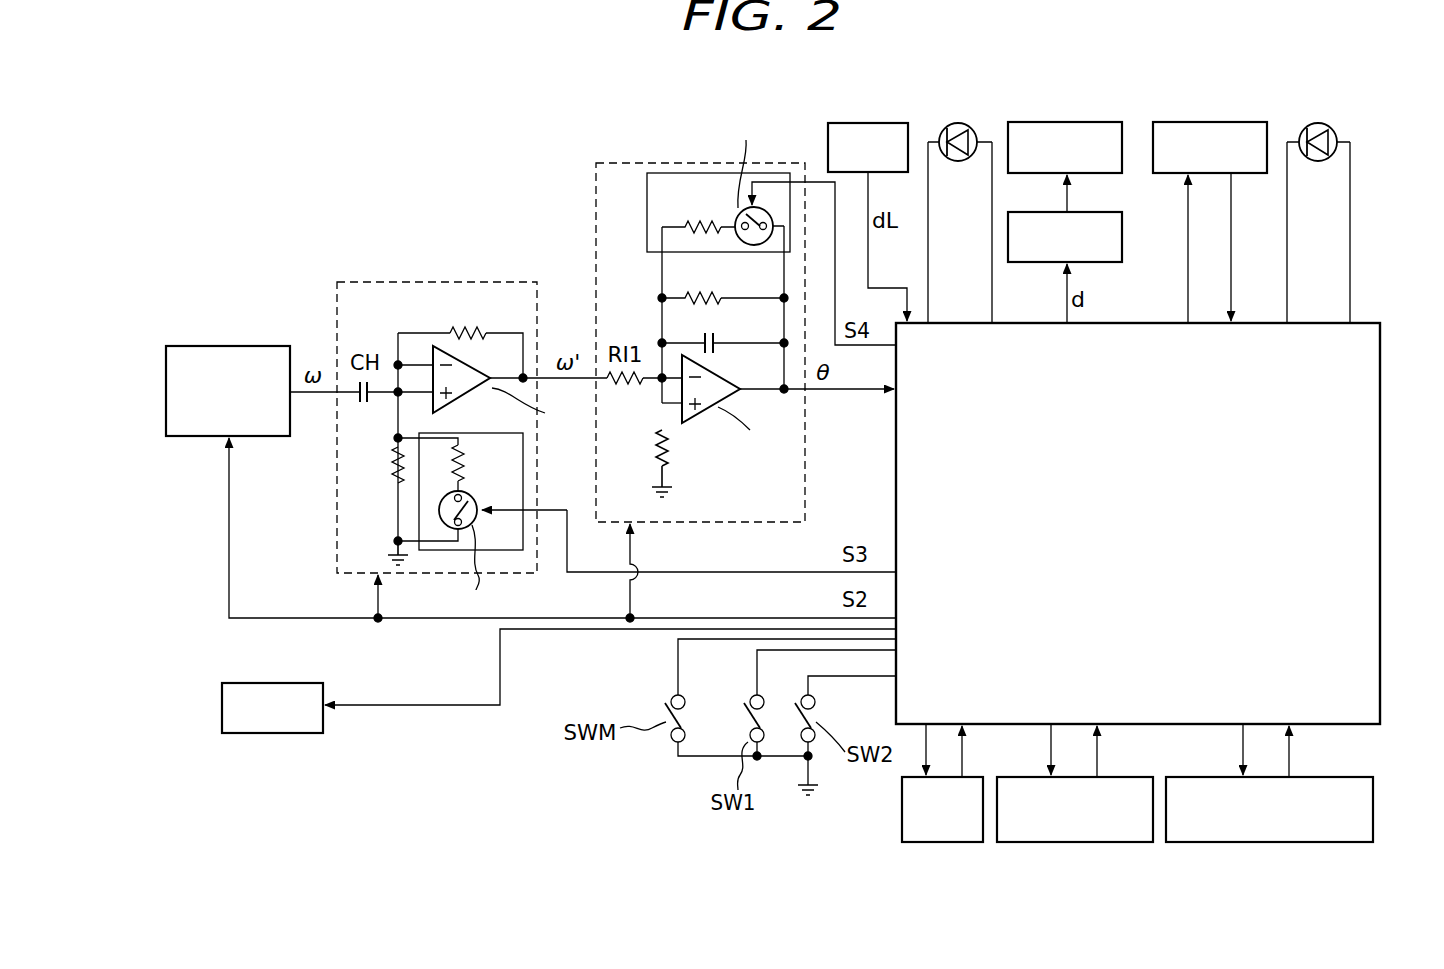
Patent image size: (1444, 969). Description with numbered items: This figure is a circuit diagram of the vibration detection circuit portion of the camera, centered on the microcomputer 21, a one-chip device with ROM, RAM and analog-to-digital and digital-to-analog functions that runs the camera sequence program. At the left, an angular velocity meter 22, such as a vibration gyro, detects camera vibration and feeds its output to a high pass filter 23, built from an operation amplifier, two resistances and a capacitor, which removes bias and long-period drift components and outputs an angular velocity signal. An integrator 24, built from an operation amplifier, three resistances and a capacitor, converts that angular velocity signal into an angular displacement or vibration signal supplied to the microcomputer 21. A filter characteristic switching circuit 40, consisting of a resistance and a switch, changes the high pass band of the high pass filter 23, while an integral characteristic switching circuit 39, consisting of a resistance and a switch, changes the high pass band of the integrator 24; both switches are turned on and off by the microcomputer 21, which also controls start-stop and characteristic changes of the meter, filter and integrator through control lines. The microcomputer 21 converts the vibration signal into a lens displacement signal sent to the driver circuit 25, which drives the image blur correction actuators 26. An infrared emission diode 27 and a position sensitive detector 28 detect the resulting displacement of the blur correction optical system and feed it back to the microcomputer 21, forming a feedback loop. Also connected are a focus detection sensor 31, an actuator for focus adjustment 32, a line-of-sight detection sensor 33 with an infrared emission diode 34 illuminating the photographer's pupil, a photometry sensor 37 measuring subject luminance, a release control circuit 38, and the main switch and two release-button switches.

The microcomputer 21 is at (1380, 510).
The angular velocity meter 22 is at (250, 345).
The high pass filter 23 is at (457, 282).
The integrator 24 is at (683, 163).
The driver circuit 25 is at (1122, 232).
The image blur correction actuators 26 is at (1072, 122).
The infrared emission diode 27 is at (961, 123).
The position sensitive detector 28 is at (873, 123).
The focus detection sensor 31 is at (945, 842).
The actuator for focus adjustment 32 is at (270, 733).
The line-of-sight detection sensor 33 is at (1212, 122).
The infrared emission diode 34 is at (1318, 123).
The photometry sensor 37 is at (1072, 842).
The release control circuit 38 is at (1262, 842).
The integral characteristic switching circuit 39 is at (647, 210).
The filter characteristic switching circuit 40 is at (523, 470).